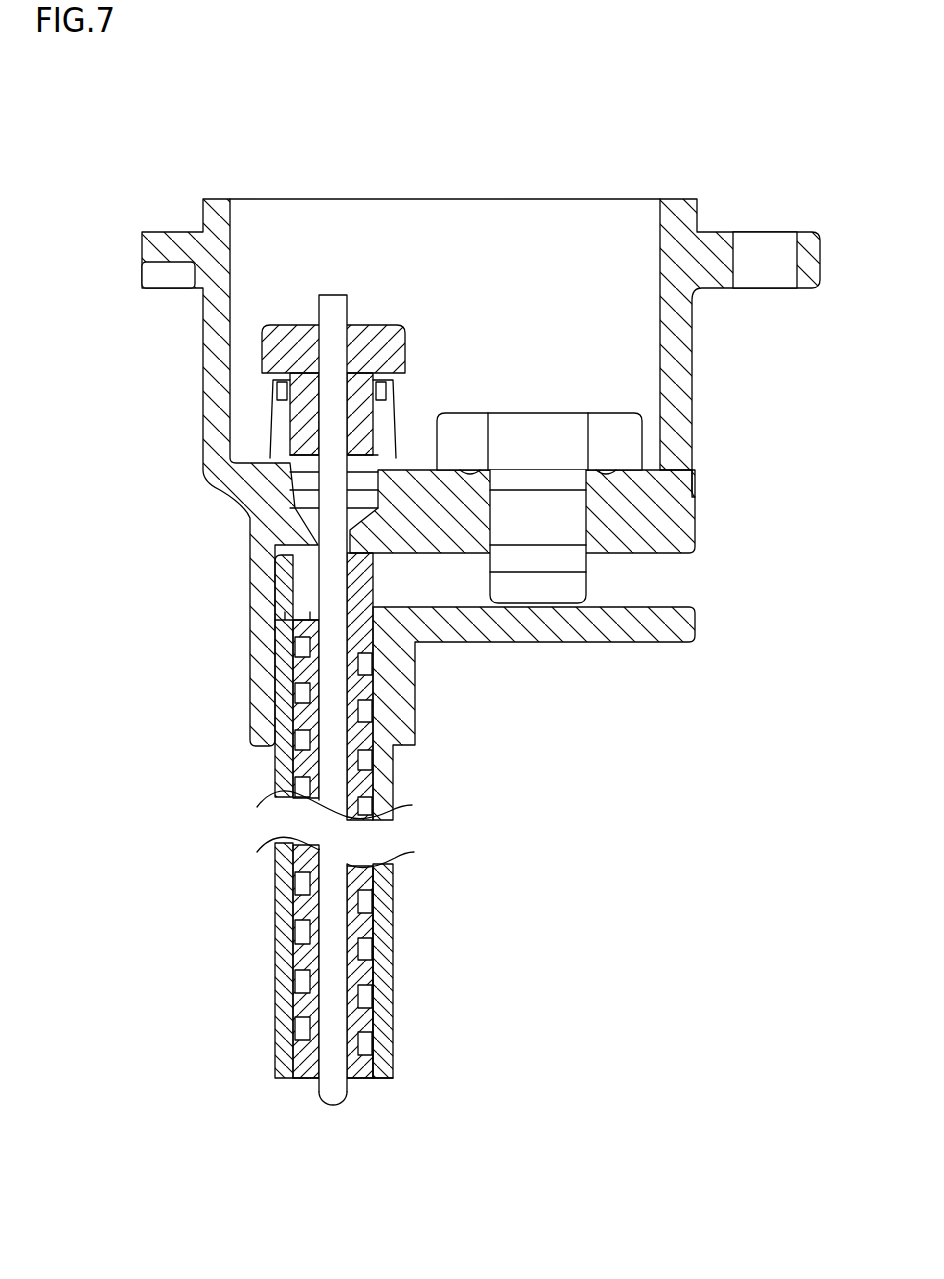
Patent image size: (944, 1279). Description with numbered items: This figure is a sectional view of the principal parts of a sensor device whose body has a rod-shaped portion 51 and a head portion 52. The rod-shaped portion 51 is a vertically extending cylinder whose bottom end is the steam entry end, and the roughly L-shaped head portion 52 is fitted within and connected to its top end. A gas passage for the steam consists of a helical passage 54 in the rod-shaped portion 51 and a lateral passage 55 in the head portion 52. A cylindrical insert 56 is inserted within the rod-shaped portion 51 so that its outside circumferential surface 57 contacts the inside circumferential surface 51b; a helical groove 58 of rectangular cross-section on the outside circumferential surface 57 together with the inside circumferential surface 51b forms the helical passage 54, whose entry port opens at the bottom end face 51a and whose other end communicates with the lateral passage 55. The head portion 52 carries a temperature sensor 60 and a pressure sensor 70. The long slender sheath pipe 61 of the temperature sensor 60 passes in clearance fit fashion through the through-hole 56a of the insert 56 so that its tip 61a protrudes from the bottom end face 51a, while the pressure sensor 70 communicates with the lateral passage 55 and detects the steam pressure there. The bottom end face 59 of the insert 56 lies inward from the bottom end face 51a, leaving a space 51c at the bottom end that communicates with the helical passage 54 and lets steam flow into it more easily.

The head portion 52 is at (250, 560).
The lateral passage 55 is at (458, 580).
The pressure sensor 70 is at (650, 442).
The temperature sensor 60 is at (264, 351).
The through-hole 56a is at (300, 921).
The insert 56 is at (393, 788).
The rod-shaped portion 51 is at (275, 893).
The inside circumferential surface 51b is at (275, 972).
The helical groove 58 is at (372, 952).
The helical passage 54 is at (393, 905).
The outside circumferential surface 57 is at (393, 975).
The bottom end face 59 is at (310, 1082).
The space 51c is at (358, 1083).
The bottom end face 51a is at (388, 1083).
The sheath pipe 61 is at (340, 870).
The tip 61a is at (335, 1107).